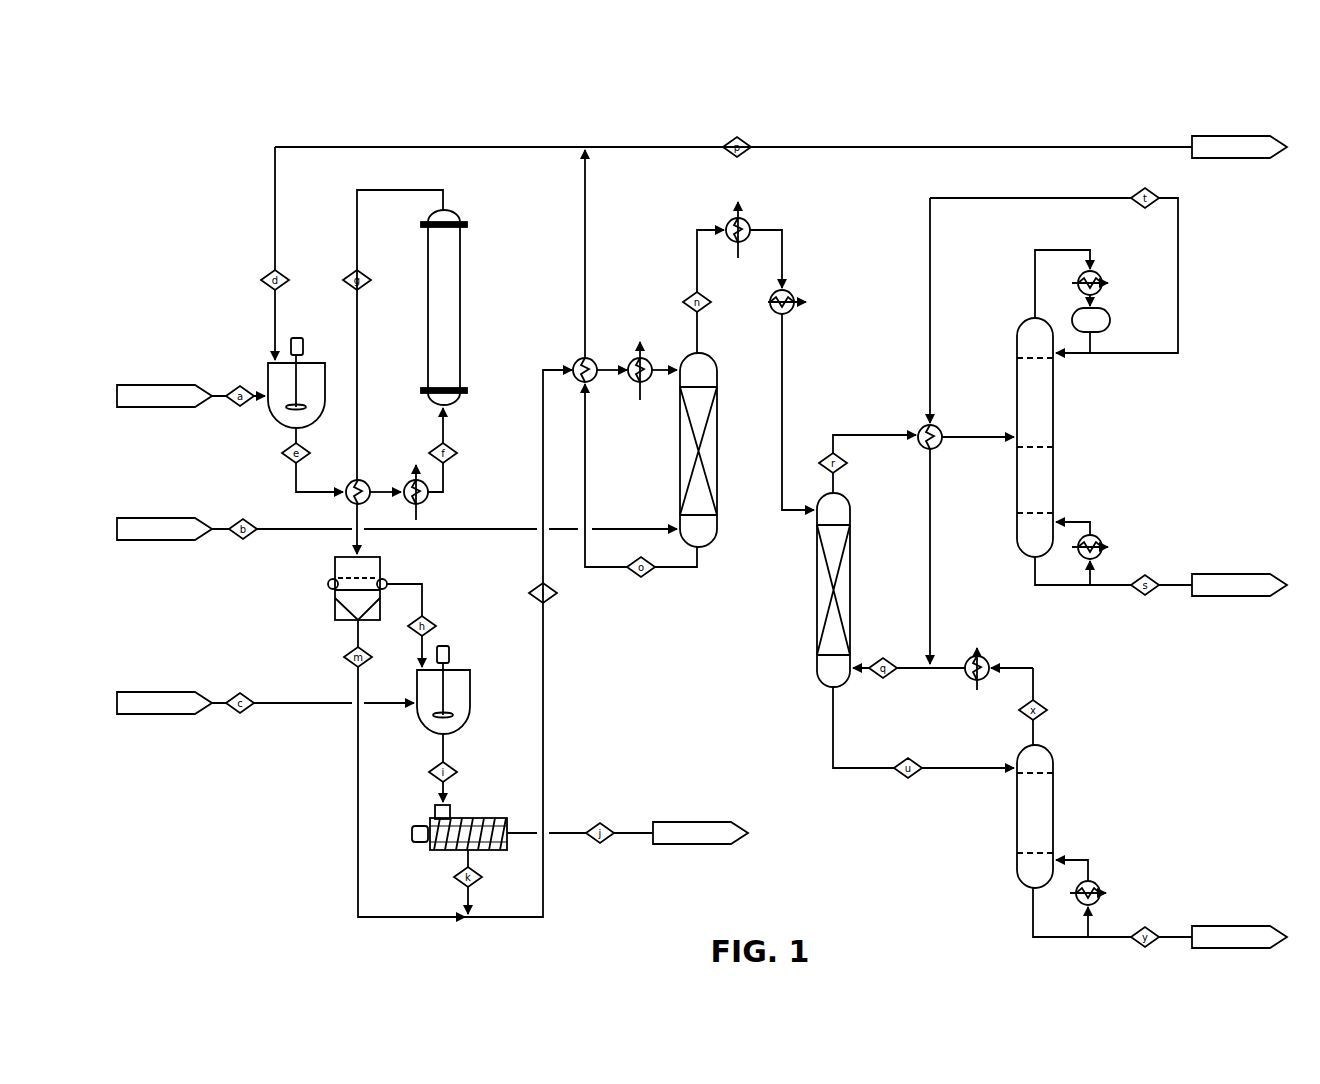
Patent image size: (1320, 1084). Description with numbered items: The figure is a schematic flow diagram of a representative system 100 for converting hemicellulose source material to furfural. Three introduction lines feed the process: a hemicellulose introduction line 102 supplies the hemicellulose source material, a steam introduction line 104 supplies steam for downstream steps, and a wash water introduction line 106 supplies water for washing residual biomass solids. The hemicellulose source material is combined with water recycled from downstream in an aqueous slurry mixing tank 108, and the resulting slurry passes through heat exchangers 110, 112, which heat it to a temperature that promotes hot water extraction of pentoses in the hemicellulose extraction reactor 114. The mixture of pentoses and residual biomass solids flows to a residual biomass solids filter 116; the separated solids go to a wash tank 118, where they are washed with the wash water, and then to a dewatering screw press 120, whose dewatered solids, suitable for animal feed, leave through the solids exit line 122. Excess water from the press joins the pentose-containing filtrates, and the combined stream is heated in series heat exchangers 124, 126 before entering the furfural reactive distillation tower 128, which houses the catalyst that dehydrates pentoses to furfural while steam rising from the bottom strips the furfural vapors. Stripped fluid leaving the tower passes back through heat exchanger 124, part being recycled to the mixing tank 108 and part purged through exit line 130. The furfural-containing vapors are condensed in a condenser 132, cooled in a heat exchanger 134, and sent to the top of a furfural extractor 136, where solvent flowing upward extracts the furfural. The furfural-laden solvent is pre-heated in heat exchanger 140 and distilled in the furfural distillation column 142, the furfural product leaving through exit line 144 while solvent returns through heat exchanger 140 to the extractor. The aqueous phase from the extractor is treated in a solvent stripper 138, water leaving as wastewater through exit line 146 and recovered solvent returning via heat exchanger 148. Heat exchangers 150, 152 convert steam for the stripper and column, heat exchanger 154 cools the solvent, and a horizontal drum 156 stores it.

The system 100 is at (769, 116).
The hemicellulose introduction line 102 is at (164, 396).
The steam introduction line 104 is at (164, 529).
The wash water introduction line 106 is at (164, 703).
The aqueous slurry mixing tank 108 is at (268, 365).
The heat exchanger 110 is at (350, 480).
The heat exchanger 112 is at (428, 498).
The hemicellulose extraction reactor 114 is at (460, 330).
The residual biomass solids filter 116 is at (334, 606).
The wash tank 118 is at (470, 700).
The dewatering screw press 120 is at (415, 828).
The solids exit line 122 is at (700, 833).
The heat exchanger 124 is at (574, 360).
The heat exchanger 126 is at (630, 360).
The furfural reactive distillation tower 128 is at (680, 456).
The exit line 130 is at (1239, 147).
The condenser 132 is at (727, 222).
The heat exchanger 134 is at (790, 312).
The furfural extractor 136 is at (818, 552).
The solvent stripper 138 is at (1017, 846).
The heat exchanger 140 is at (922, 428).
The furfural distillation column 142 is at (1053, 452).
The exit line 144 is at (1239, 585).
The exit line 146 is at (1239, 937).
The heat exchanger 148 is at (966, 664).
The heat exchanger 150 is at (1096, 884).
The heat exchanger 152 is at (1098, 538).
The heat exchanger 154 is at (1098, 275).
The horizontal drum 156 is at (1108, 316).